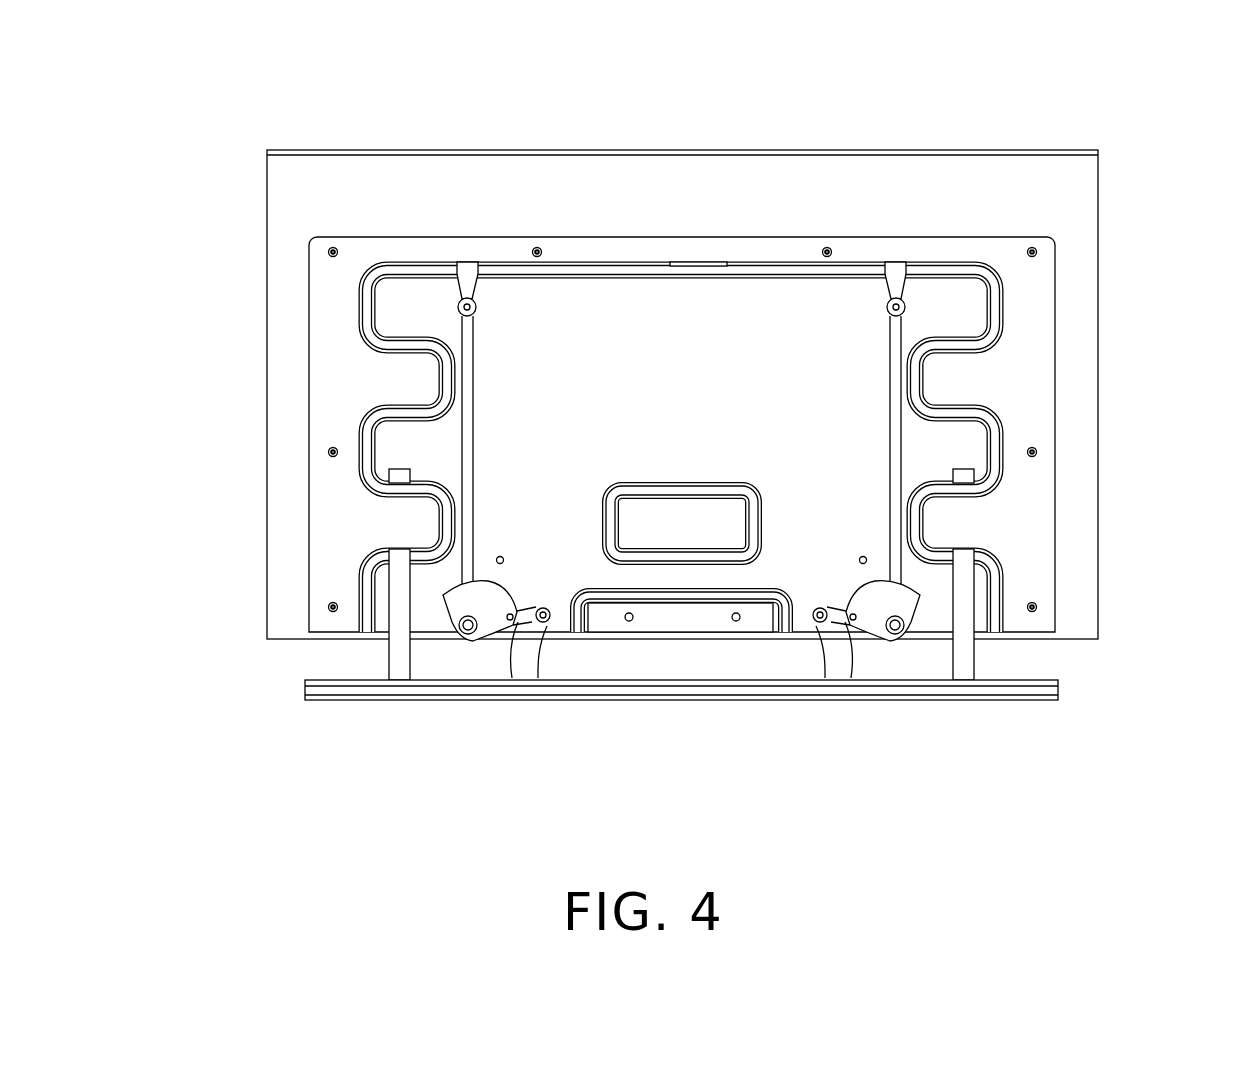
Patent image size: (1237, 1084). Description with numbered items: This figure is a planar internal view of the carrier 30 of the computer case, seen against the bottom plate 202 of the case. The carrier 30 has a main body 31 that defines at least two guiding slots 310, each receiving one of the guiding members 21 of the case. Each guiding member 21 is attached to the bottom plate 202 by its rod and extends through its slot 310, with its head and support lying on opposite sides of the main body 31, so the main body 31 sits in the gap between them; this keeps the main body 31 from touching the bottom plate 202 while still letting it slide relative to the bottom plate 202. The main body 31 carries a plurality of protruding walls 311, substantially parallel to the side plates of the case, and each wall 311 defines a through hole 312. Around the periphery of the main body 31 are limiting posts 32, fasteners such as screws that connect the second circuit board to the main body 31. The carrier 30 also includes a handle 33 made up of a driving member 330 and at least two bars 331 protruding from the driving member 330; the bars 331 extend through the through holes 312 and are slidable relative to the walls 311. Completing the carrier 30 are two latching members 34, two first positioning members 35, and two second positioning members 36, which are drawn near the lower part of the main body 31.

The bottom plate 202 is at (1060, 216).
The guiding member 21 is at (466, 298).
The carrier 30 is at (686, 434).
The main body 31 is at (1056, 357).
The guiding slot 310 is at (896, 298).
The wall 311 is at (1000, 448).
The through hole 312 is at (403, 552).
The limiting post 32 is at (327, 250).
The handle 33 is at (665, 699).
The driving member 330 is at (398, 803).
The bar 331 is at (402, 667).
The latching member 34 is at (490, 627).
The first positioning member 35 is at (497, 557).
The second positioning member 36 is at (547, 624).